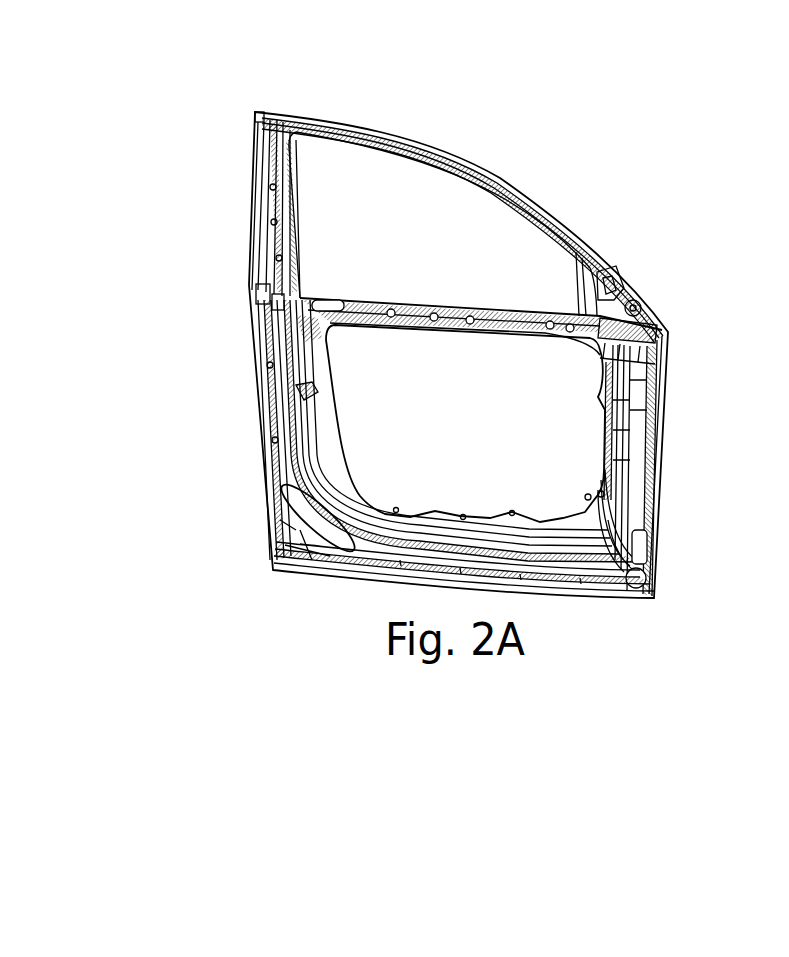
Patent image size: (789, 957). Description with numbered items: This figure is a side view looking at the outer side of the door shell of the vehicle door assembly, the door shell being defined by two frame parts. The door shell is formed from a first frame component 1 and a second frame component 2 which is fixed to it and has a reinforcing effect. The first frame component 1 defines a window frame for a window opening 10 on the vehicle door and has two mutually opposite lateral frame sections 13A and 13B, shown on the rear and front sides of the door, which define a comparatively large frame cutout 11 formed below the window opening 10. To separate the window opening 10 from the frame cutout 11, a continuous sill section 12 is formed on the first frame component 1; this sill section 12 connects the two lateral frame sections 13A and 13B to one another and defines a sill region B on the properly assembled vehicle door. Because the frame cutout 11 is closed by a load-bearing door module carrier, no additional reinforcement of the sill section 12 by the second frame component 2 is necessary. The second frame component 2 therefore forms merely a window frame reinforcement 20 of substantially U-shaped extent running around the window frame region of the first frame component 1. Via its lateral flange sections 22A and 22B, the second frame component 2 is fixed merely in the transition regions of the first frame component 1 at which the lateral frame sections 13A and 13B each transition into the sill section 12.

The first frame component 1 is at (666, 452).
The second frame component 2 is at (477, 165).
The window frame reinforcement 20 is at (541, 208).
The window opening 10 is at (342, 194).
The frame cutout 11 is at (478, 443).
The sill section 12 is at (488, 302).
The sill region B is at (423, 302).
The lateral flange section 22A is at (640, 292).
The lateral flange section 22B is at (252, 288).
The lateral frame section 13A is at (650, 385).
The lateral frame section 13B is at (258, 395).